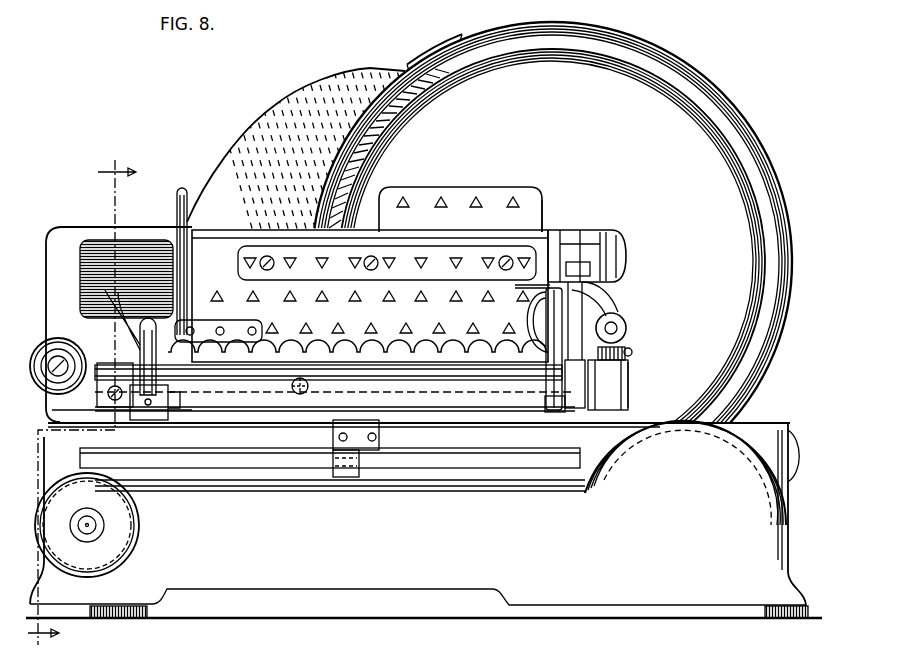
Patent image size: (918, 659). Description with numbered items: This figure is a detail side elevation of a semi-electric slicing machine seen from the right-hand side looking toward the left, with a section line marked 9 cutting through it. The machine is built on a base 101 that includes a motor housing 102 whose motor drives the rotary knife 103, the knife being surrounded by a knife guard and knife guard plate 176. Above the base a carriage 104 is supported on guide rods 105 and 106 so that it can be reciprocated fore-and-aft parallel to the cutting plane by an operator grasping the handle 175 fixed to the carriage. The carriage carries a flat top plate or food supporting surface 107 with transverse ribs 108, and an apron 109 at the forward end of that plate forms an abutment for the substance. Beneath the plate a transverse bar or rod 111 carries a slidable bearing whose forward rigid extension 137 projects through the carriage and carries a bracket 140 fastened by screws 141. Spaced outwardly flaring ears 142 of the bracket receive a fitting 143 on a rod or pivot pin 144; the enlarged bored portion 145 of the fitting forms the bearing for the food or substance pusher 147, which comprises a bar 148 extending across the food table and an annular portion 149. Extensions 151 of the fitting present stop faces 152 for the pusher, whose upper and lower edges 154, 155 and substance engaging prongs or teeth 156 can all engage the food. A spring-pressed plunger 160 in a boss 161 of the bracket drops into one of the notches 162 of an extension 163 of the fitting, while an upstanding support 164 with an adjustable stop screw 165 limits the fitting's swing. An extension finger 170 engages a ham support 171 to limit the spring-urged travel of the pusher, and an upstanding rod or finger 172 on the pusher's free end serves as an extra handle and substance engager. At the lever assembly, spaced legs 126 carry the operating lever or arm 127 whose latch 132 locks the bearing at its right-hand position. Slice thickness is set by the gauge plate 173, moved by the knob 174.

The base 101 is at (778, 550).
The motor housing 102 is at (744, 432).
The rotary knife 103 is at (405, 72).
The carriage 104 is at (486, 420).
The guide rod 105 is at (792, 446).
The guide rod 106 is at (520, 462).
The top plate or food supporting surface 107 is at (386, 420).
The transverse ribs 108 is at (262, 380).
The apron 109 is at (548, 352).
The transverse bar or rod 111 is at (300, 395).
The spaced legs 126 is at (148, 420).
The operating lever or arm 127 is at (148, 317).
The latch 132 is at (176, 410).
The forward rigid extension 137 is at (556, 412).
The bracket 140 is at (580, 408).
The screws 141 is at (620, 318).
The outwardly flaring ears 142 is at (628, 336).
The fitting 143 is at (618, 300).
The rod or pivot pin 144 is at (628, 326).
The enlarged bored portion 145 is at (580, 230).
The food or substance pusher 147 is at (546, 200).
The bar 148 is at (256, 228).
The annular portion 149 is at (554, 230).
The extensions 151 is at (626, 266).
The stop faces 152 is at (585, 262).
The upper edge 154 is at (490, 186).
The lower edge 155 is at (451, 350).
The substance engaging prongs or teeth 156 is at (403, 196).
The spring-pressed plunger 160 is at (606, 368).
The boss 161 is at (630, 392).
The notches 162 is at (630, 358).
The extension 163 is at (628, 352).
The upstanding support 164 is at (536, 300).
The adjustable stop screw 165 is at (524, 288).
The extension finger 170 is at (200, 315).
The ham support 171 is at (72, 234).
The upstanding rod or finger 172 is at (182, 190).
The gauge plate 173 is at (290, 100).
The knob 174 is at (137, 525).
The handle 175 is at (60, 340).
The knife guard and knife guard plate 176 is at (742, 123).
The section line 9 is at (82, 400).